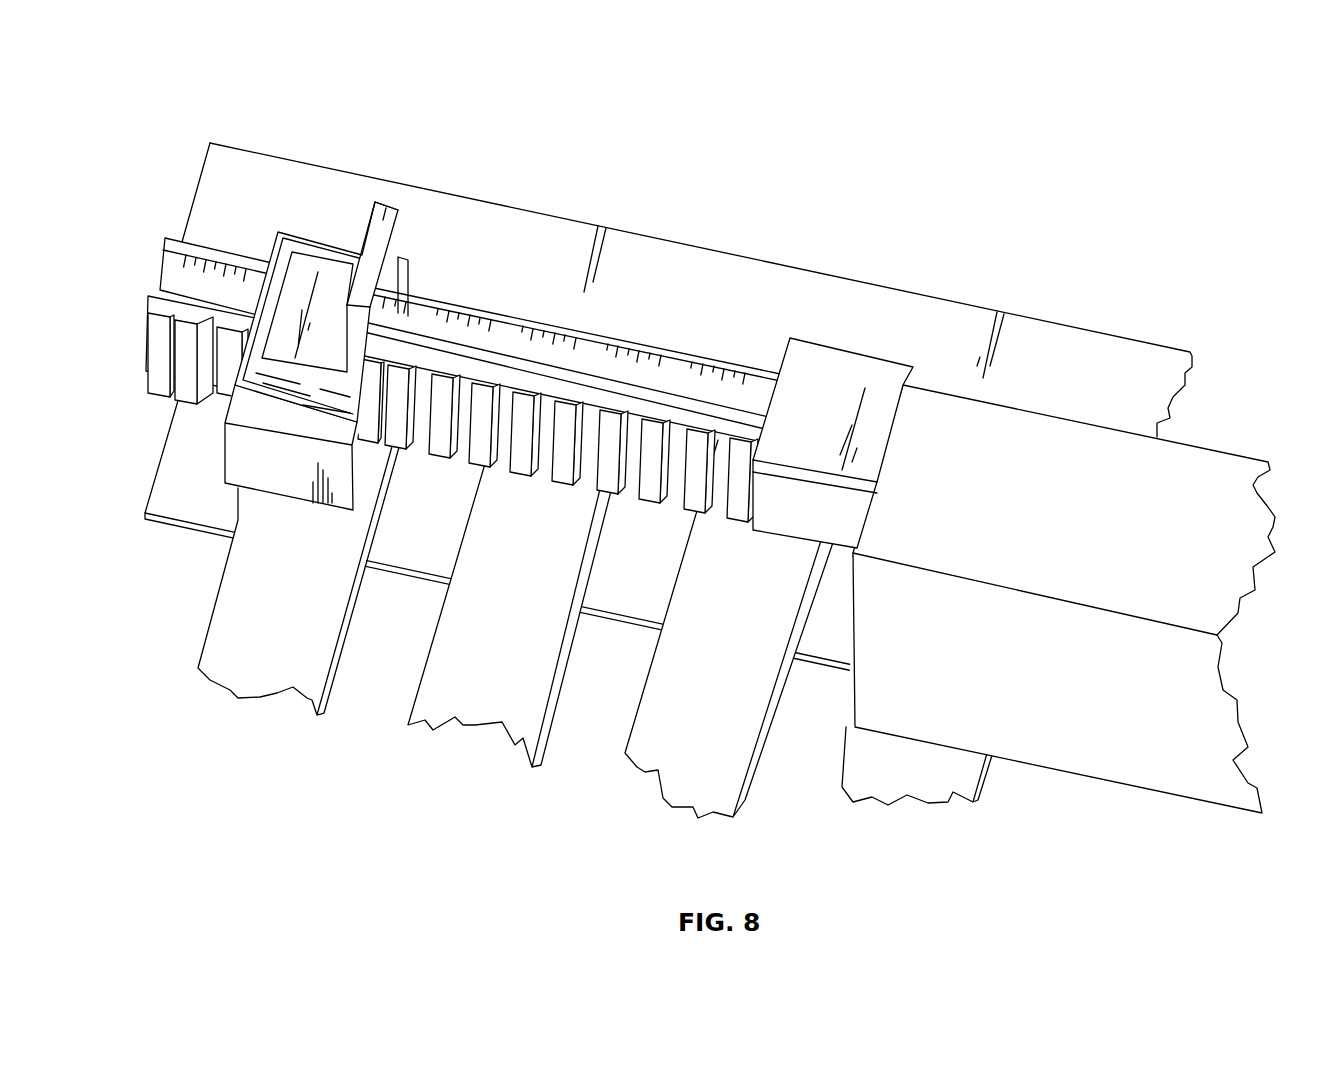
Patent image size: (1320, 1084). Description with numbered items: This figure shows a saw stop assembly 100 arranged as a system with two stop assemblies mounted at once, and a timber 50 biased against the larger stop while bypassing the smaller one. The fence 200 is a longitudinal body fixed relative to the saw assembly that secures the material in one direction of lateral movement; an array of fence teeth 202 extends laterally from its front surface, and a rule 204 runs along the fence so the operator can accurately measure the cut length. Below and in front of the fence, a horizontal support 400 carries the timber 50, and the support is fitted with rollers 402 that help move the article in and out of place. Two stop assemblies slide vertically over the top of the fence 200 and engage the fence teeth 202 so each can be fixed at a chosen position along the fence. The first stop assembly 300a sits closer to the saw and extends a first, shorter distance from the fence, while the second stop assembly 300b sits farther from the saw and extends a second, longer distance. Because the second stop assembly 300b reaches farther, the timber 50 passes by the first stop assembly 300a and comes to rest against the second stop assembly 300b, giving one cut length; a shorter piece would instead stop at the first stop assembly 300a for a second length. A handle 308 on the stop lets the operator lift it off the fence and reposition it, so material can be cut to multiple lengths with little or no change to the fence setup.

The saw stop assembly 100 is at (838, 120).
The fence 200 is at (627, 352).
The fence teeth 202 is at (537, 468).
The rule 204 is at (156, 262).
The first stop assembly 300a is at (862, 320).
The second stop assembly 300b is at (347, 203).
The handle 308 is at (388, 203).
The horizontal support 400 is at (1130, 303).
The rollers 402 is at (232, 628).
The timber 50 is at (1078, 757).